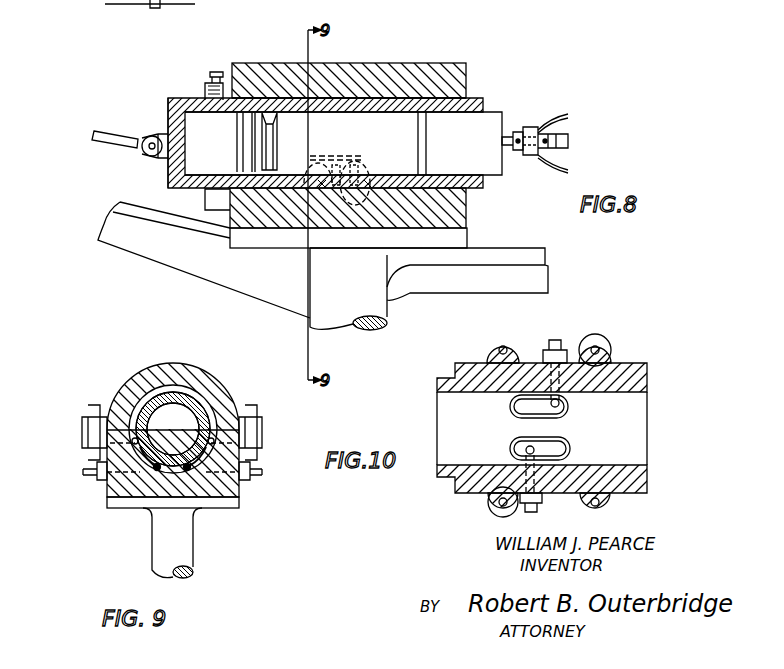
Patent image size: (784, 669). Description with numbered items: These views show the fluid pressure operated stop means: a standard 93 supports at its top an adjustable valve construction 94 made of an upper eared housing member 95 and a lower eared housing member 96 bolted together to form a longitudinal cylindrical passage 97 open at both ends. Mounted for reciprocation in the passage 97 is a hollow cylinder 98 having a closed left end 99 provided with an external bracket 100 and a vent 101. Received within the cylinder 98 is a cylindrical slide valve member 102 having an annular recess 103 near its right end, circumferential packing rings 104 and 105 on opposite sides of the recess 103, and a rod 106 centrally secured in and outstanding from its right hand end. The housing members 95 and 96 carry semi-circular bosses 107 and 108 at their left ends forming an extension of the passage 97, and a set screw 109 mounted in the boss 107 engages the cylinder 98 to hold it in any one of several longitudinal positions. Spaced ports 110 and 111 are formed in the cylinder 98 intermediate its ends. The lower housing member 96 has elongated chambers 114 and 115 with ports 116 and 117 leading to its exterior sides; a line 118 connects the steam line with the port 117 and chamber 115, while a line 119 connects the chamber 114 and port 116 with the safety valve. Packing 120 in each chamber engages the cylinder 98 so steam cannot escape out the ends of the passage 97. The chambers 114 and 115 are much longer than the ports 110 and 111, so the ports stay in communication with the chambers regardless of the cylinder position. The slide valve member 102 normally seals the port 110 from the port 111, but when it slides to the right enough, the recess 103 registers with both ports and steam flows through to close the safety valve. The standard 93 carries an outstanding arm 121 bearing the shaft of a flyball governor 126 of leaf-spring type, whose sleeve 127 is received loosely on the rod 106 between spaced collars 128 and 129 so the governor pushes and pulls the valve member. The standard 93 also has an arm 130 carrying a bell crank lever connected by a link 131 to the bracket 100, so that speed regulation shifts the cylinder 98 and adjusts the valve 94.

In FIG. 8, the standard 93 is at (342, 312).
In FIG. 9, the standard 93 is at (185, 548).
In FIG. 8, the adjustable valve construction 94 is at (470, 72).
In FIG. 9, the adjustable valve construction 94 is at (97, 377).
In FIG. 8, the upper eared housing member 95 is at (392, 80).
In FIG. 9, the upper eared housing member 95 is at (205, 390).
In FIG. 8, the lower eared housing member 96 is at (455, 215).
In FIG. 9, the lower eared housing member 96 is at (235, 488).
In FIG. 10, the lower eared housing member 96 is at (625, 377).
In FIG. 8, the longitudinal cylindrical passage 97 is at (410, 112).
In FIG. 9, the longitudinal cylindrical passage 97 is at (150, 400).
In FIG. 10, the longitudinal cylindrical passage 97 is at (630, 408).
In FIG. 8, the hollow cylinder 98 is at (483, 106).
In FIG. 9, the hollow cylinder 98 is at (185, 415).
In FIG. 8, the closed left end 99 is at (170, 108).
In FIG. 8, the external bracket 100 is at (158, 155).
In FIG. 8, the vent 101 is at (178, 125).
In FIG. 8, the cylindrical slide valve member 102 is at (340, 112).
In FIG. 9, the cylindrical slide valve member 102 is at (192, 392).
In FIG. 8, the annular recess 103 is at (265, 122).
In FIG. 8, the packing ring 104 is at (247, 135).
In FIG. 8, the packing ring 105 is at (420, 140).
In FIG. 8, the rod 106 is at (505, 135).
In FIG. 8, the semi-circular boss 107 is at (205, 88).
In FIG. 8, the semi-circular boss 108 is at (207, 200).
In FIG. 10, the semi-circular boss 108 is at (445, 487).
In FIG. 8, the set screw 109 is at (216, 68).
In FIG. 9, the port 110 is at (225, 408).
In FIG. 8, the port 111 is at (348, 160).
In FIG. 9, the port 111 is at (140, 440).
In FIG. 9, the elongated chamber 114 is at (190, 470).
In FIG. 10, the elongated chamber 114 is at (520, 448).
In FIG. 8, the elongated chamber 115 is at (326, 165).
In FIG. 9, the elongated chamber 115 is at (150, 470).
In FIG. 10, the elongated chamber 115 is at (520, 405).
In FIG. 9, the port 116 is at (222, 462).
In FIG. 10, the port 116 is at (548, 474).
In FIG. 8, the port 117 is at (372, 170).
In FIG. 9, the port 117 is at (115, 470).
In FIG. 10, the port 117 is at (568, 352).
In FIG. 9, the line 118 is at (83, 472).
In FIG. 10, the line 118 is at (555, 340).
In FIG. 9, the line 119 is at (255, 477).
In FIG. 10, the line 119 is at (540, 505).
In FIG. 8, the packing 120 is at (356, 165).
In FIG. 9, the packing 120 is at (212, 440).
In FIG. 10, the packing 120 is at (562, 403).
In FIG. 8, the outstanding arm 121 is at (530, 278).
In FIG. 8, the flyball governor 126 is at (560, 112).
In FIG. 8, the sleeve 127 is at (532, 158).
In FIG. 8, the collar 128 is at (518, 152).
In FIG. 8, the collar 129 is at (563, 138).
In FIG. 8, the arm 130 is at (168, 256).
In FIG. 8, the link 131 is at (115, 140).